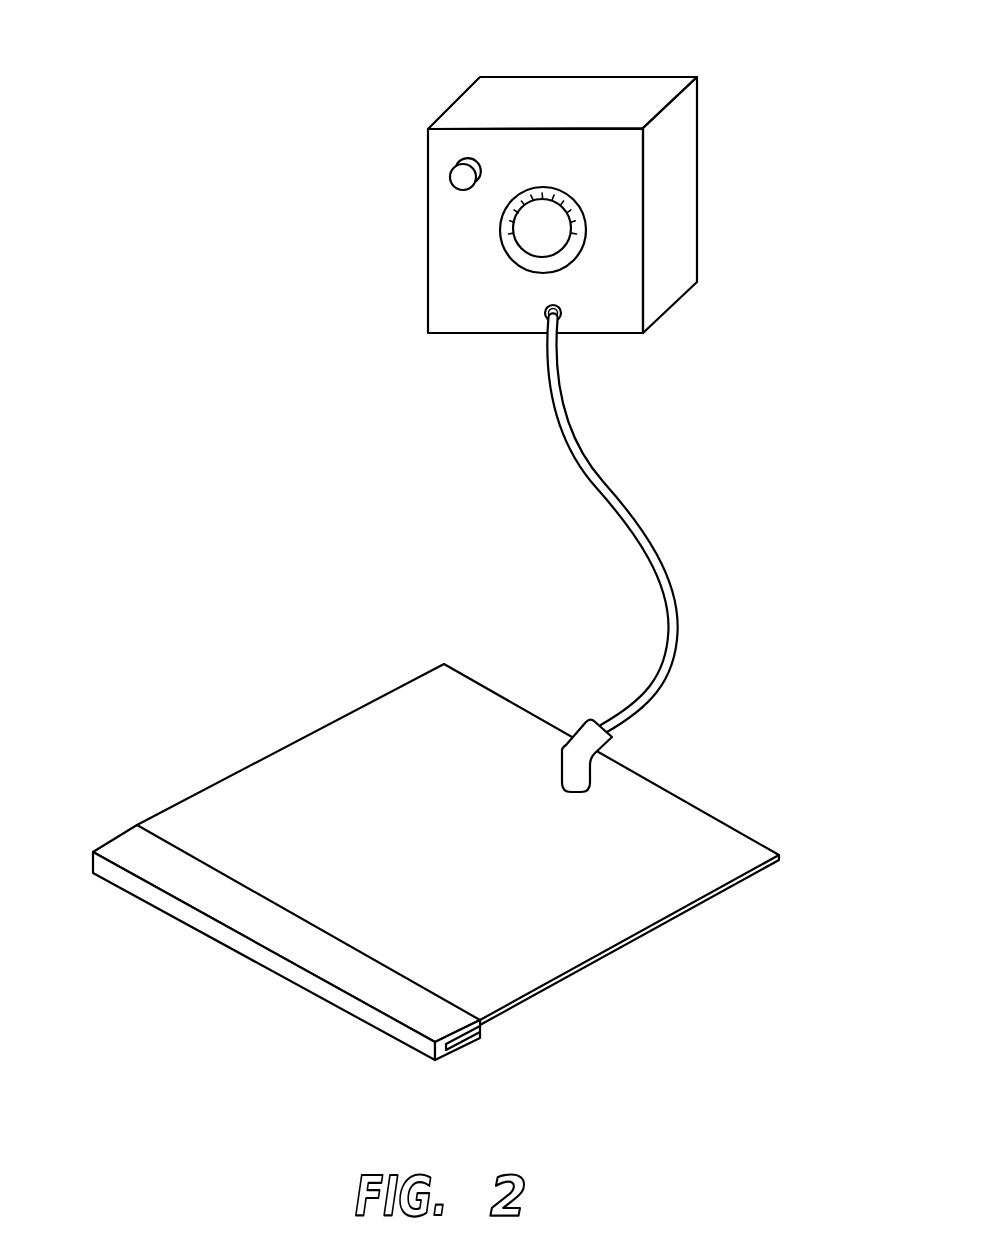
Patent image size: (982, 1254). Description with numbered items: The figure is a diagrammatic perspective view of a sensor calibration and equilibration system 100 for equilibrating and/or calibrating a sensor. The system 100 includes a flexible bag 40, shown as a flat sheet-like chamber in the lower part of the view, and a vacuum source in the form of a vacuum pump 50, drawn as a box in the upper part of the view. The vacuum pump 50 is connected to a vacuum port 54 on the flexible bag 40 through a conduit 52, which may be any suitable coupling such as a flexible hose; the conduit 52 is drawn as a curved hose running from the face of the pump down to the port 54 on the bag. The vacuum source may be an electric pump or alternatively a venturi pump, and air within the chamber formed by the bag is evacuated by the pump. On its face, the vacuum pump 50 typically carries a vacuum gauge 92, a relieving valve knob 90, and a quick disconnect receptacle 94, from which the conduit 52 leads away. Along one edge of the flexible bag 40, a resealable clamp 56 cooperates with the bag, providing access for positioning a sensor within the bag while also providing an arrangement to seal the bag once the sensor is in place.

The sensor calibration and equilibration system 100 is at (248, 382).
The vacuum pump 50 is at (480, 74).
The relieving valve knob 90 is at (452, 170).
The vacuum gauge 92 is at (587, 218).
The quick disconnect receptacle 94 is at (547, 308).
The conduit 52 is at (617, 504).
The vacuum port 54 is at (609, 739).
The flexible bag 40 is at (438, 661).
The resealable clamp 56 is at (191, 930).